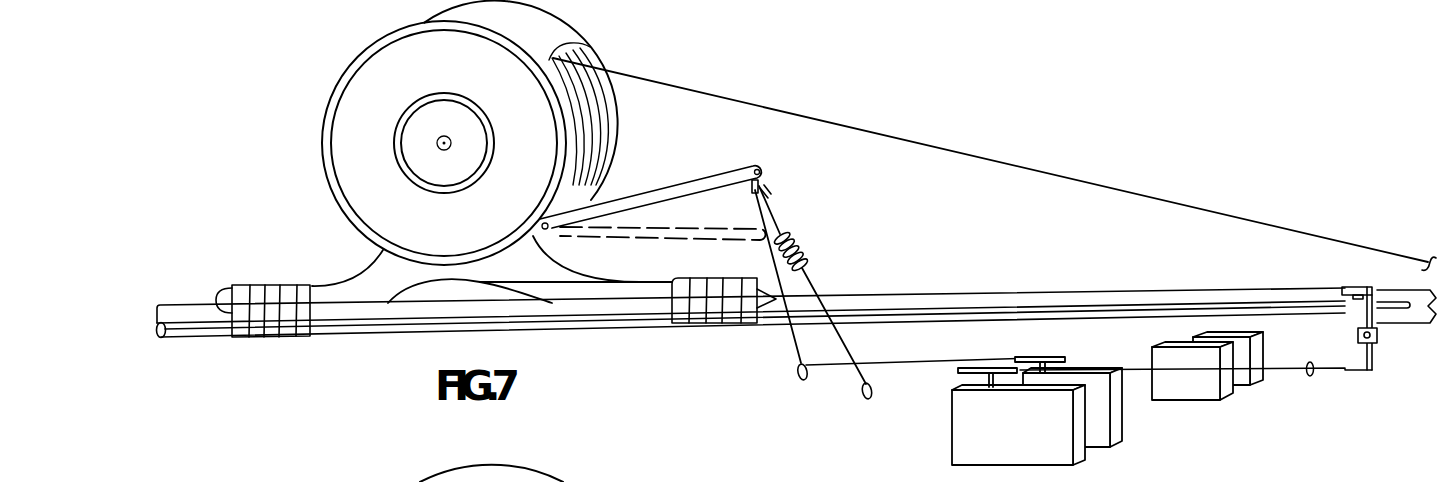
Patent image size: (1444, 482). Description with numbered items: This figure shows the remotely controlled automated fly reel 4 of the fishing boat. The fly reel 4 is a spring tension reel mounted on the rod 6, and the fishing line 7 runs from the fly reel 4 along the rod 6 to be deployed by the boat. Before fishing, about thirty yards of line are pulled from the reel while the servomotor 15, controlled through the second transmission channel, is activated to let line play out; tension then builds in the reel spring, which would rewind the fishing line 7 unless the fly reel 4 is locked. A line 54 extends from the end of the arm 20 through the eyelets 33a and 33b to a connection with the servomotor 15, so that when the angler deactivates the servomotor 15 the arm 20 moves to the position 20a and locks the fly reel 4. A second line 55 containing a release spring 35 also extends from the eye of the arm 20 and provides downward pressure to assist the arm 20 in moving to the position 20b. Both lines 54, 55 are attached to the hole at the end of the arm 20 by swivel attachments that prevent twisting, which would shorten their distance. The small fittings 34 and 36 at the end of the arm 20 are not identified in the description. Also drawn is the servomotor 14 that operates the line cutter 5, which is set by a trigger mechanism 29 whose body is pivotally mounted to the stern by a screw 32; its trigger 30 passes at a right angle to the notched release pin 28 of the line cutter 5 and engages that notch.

The fly reel 4 is at (459, 74).
The line cutter 5 is at (1412, 270).
The rod 6 is at (1032, 292).
The line 7 is at (1195, 204).
The servomotor 14 is at (977, 437).
The servomotor 15 is at (1115, 430).
The arm 20 is at (653, 186).
The locked position of arm 20a is at (722, 170).
The release position of arm 20b is at (672, 240).
The release pin 28 is at (1373, 287).
The trigger mechanism 29 is at (1358, 372).
The trigger 30 is at (1358, 320).
The screw 32 is at (1380, 340).
The eyelet 33a is at (872, 393).
The eyelet 33b is at (797, 380).
The pivot pin 34 is at (765, 185).
The release spring 35 is at (805, 243).
The connector 36 is at (770, 194).
The line 54 is at (787, 334).
The second line 55 is at (774, 207).